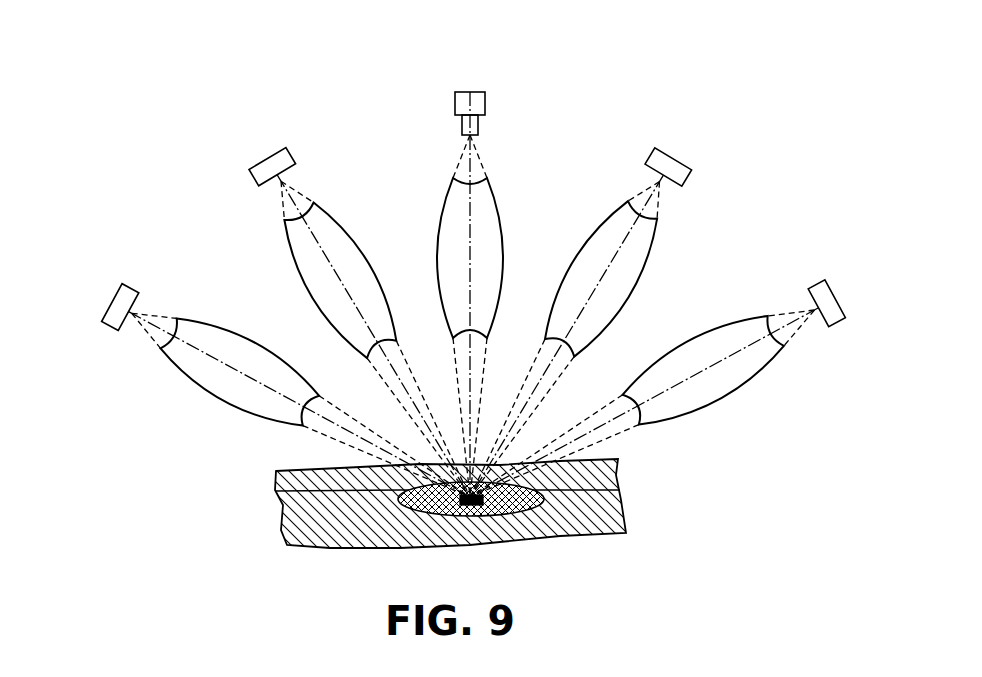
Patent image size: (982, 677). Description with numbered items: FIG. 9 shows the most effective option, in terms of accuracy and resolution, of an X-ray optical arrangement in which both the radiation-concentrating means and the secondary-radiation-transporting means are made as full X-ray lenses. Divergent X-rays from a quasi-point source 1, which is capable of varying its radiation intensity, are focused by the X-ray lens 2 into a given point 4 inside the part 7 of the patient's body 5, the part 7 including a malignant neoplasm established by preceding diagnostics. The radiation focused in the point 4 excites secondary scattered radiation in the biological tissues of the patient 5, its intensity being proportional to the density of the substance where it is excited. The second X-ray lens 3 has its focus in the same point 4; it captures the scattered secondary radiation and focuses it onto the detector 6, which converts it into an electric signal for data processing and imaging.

The quasi-point X-ray source 1 is at (463, 100).
The X-ray lens 2 is at (463, 207).
The second X-ray lens 3 is at (188, 363).
The focus point 4 is at (280, 492).
The patient's body 5 is at (283, 527).
The radiation detector 6 is at (117, 320).
The part of the patient's body 7 is at (617, 490).